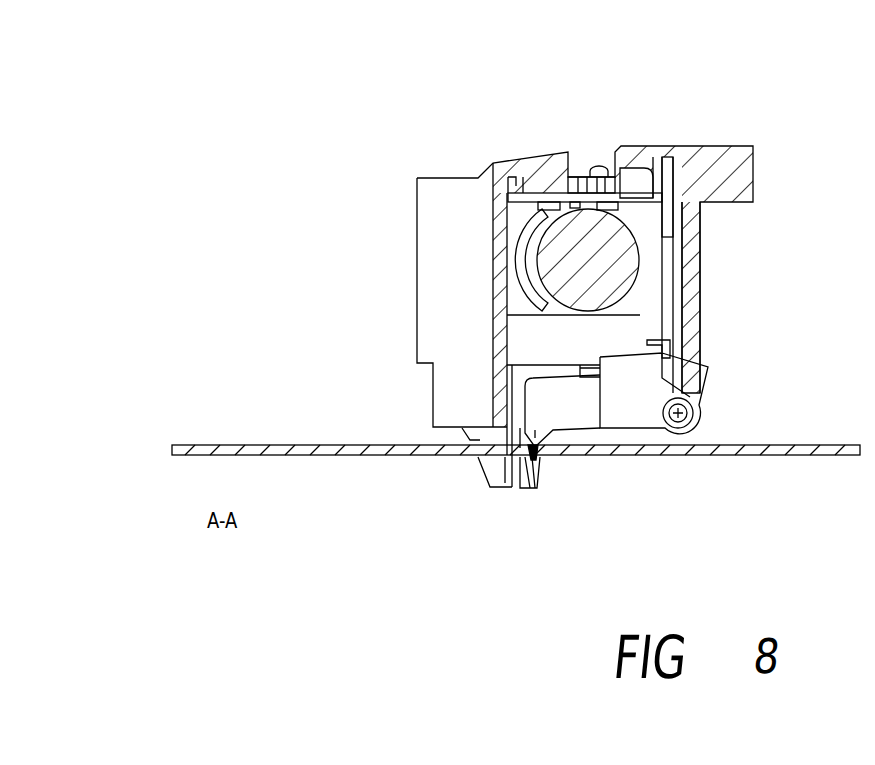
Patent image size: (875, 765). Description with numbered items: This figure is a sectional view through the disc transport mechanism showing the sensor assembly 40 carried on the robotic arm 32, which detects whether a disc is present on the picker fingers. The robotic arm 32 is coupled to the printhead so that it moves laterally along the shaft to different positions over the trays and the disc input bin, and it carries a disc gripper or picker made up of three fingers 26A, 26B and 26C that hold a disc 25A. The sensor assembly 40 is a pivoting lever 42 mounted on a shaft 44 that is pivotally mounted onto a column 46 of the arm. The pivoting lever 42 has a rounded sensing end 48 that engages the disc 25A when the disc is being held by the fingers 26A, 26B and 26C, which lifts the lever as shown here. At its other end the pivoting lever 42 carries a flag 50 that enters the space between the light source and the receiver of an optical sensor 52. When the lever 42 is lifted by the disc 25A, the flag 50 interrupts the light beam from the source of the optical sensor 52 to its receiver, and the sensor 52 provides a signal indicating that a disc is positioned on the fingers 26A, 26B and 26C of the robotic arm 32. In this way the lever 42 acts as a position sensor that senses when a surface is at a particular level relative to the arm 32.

The robotic arm 32 is at (706, 146).
The column 46 is at (690, 272).
The flag 50 is at (613, 362).
The pivoting lever 42 is at (573, 390).
The optical sensor 52 is at (670, 357).
The shaft 44 is at (695, 412).
The rounded sensing end 48 is at (535, 437).
The sensor assembly 40 is at (641, 416).
The finger 26A is at (467, 477).
The finger 26B is at (543, 478).
The finger 26C is at (528, 490).
The disc 25A is at (768, 462).